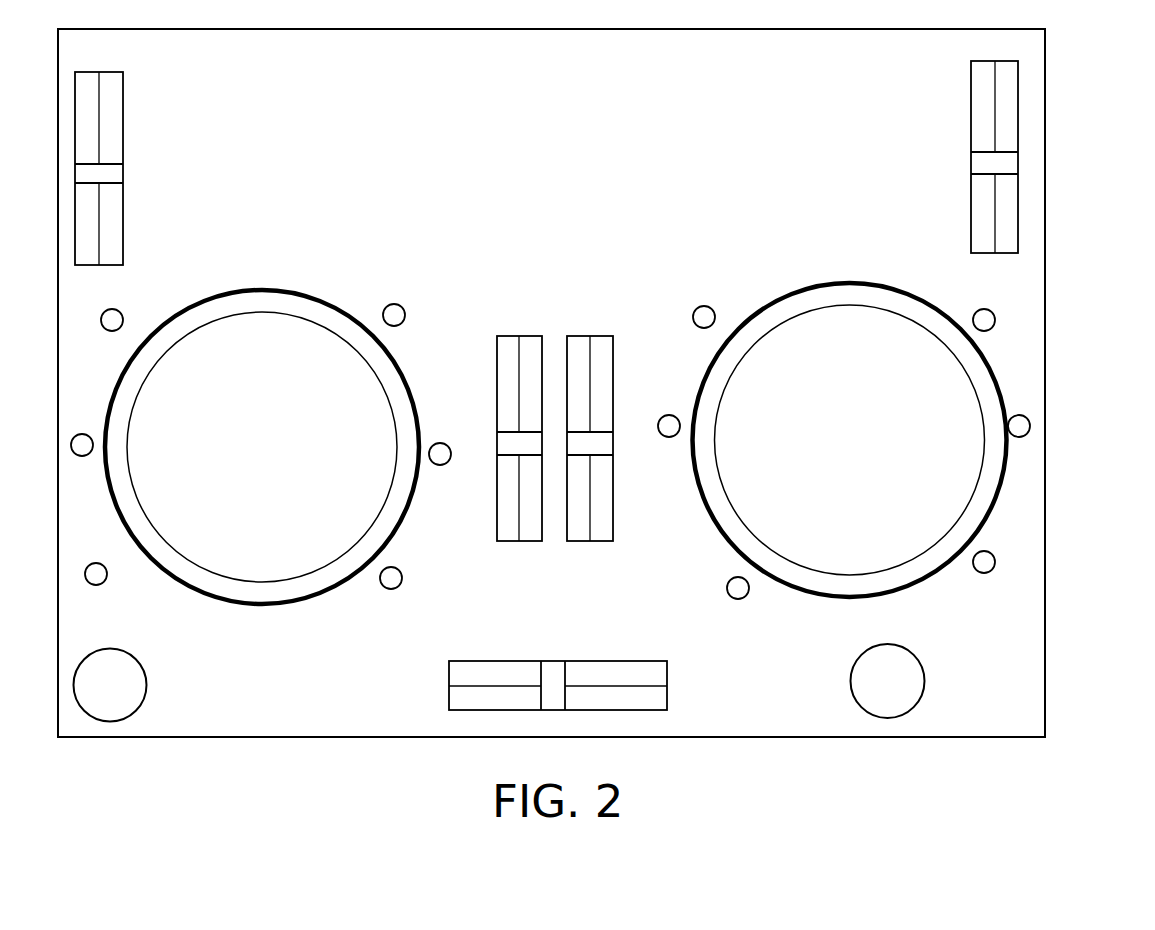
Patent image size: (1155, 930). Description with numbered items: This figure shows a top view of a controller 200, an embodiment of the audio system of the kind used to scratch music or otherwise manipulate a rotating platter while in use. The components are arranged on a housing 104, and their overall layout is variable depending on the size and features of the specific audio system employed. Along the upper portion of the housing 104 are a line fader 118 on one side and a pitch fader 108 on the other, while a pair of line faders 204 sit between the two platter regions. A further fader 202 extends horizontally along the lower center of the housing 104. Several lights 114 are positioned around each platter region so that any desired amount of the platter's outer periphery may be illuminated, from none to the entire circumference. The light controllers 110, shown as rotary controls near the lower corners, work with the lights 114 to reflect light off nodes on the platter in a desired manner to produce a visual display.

The controller 200 is at (1082, 128).
The housing 104 is at (582, 163).
The line fader 118 is at (158, 164).
The pitch fader 108 is at (945, 208).
The line faders 204 is at (584, 318).
The crossfader slider 202 is at (618, 637).
The light 114 is at (118, 309).
The light controller 110 is at (147, 677).